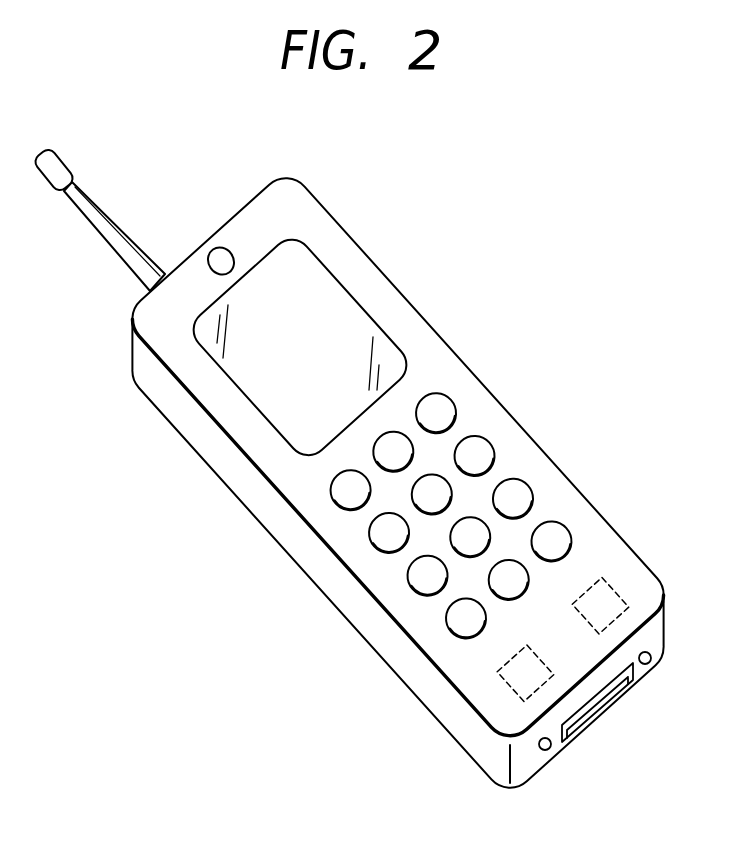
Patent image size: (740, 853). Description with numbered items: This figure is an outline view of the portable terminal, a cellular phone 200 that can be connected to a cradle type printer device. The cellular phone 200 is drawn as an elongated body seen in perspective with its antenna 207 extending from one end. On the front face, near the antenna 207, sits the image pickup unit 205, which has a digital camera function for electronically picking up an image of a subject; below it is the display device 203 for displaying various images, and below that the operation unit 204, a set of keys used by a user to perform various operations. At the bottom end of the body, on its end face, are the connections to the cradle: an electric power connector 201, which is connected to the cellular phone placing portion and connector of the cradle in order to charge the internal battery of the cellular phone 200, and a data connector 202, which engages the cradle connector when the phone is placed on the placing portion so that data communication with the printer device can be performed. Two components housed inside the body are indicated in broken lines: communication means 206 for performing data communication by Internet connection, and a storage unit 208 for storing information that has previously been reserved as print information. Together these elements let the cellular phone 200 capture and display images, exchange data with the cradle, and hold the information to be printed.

The cellular phone 200 is at (304, 165).
The electric power connector 201 is at (646, 665).
The data connector 202 is at (598, 714).
The display device 203 is at (323, 260).
The operation unit 204 is at (488, 443).
The image pickup unit 205 is at (227, 247).
The communication means 206 is at (508, 694).
The antenna 207 is at (104, 213).
The storage unit 208 is at (613, 590).